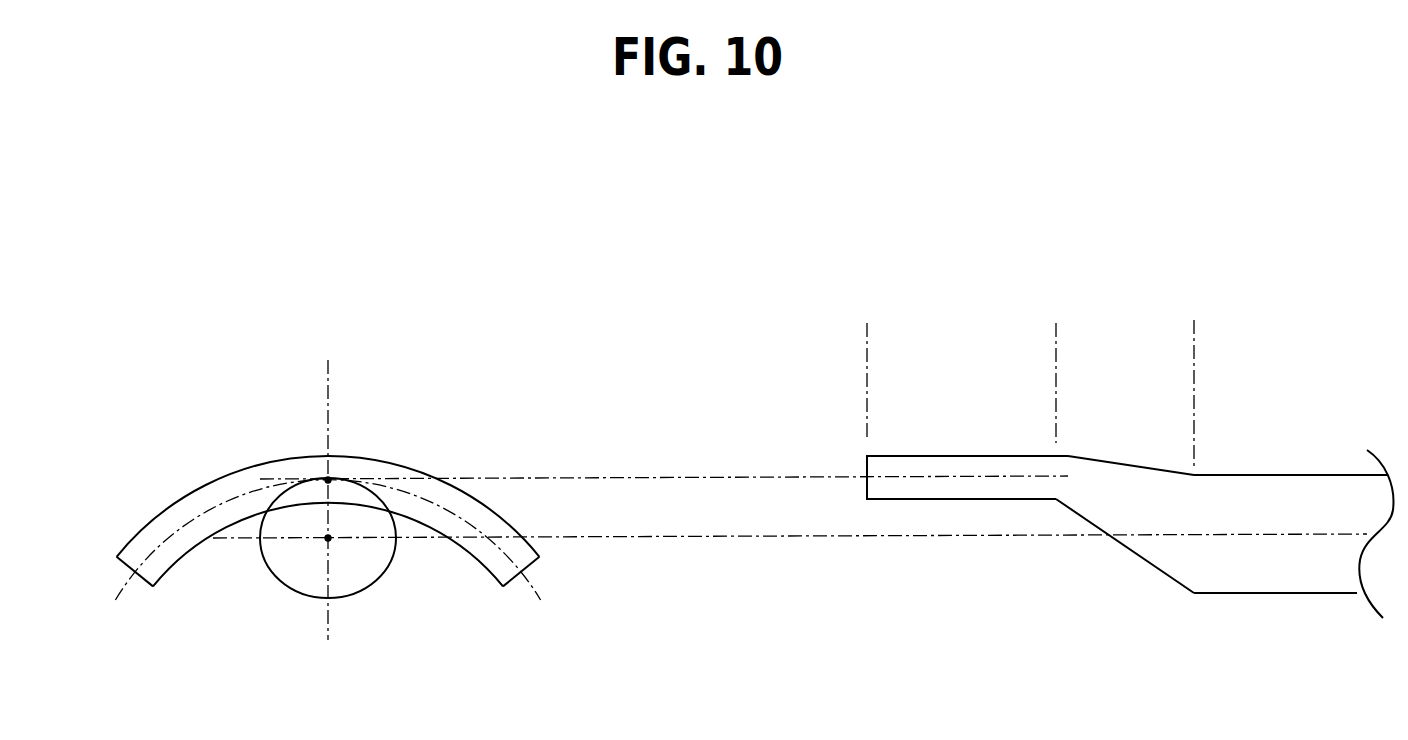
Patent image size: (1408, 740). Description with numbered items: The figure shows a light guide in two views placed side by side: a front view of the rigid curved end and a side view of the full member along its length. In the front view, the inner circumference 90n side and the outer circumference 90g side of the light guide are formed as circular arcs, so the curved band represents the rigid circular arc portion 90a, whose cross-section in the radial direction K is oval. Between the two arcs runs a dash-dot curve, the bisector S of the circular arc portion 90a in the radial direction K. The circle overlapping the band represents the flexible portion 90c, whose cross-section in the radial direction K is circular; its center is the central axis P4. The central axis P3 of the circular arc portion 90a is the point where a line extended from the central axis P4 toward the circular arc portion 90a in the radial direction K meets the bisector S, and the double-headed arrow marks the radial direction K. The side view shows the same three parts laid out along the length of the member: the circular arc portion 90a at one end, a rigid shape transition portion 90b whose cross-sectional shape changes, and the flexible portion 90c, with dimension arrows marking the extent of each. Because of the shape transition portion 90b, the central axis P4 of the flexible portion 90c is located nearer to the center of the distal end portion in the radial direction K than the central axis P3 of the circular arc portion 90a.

The circular arc portion 90a is at (414, 467).
The shape transition portion 90b is at (1056, 365).
The flexible portion 90c is at (383, 572).
The outer circumference side 90g is at (256, 459).
The inner circumference side 90n is at (196, 557).
The central axis of the circular arc portion P3 is at (331, 478).
The central axis of the flexible portion P4 is at (327, 541).
The radial direction K is at (83, 307).
The bisector S is at (537, 589).